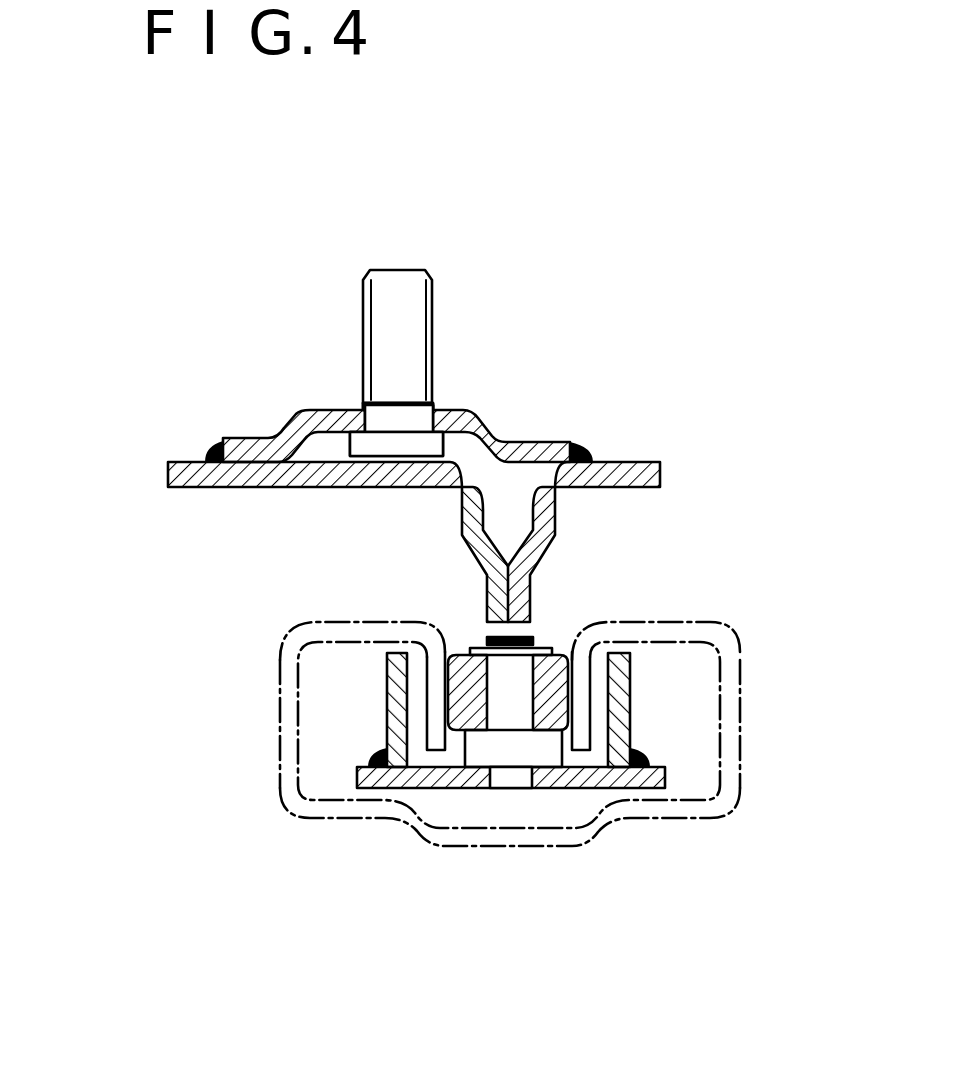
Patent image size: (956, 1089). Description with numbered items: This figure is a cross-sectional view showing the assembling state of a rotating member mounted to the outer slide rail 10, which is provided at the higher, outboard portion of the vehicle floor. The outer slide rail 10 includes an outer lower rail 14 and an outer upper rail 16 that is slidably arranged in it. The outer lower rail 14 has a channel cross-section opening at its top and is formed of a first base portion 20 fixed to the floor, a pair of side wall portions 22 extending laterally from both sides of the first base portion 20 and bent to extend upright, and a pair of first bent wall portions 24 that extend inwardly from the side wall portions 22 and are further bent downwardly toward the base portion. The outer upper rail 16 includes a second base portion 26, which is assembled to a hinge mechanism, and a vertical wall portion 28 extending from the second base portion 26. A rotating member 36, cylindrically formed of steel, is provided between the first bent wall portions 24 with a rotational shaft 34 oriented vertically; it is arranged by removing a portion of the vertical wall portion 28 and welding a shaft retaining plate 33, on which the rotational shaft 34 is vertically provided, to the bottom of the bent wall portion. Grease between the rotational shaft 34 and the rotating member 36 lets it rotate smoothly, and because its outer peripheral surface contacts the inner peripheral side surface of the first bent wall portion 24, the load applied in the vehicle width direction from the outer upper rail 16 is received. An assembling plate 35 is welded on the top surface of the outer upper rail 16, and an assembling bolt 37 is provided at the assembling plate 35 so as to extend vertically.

The outer slide rail 10 is at (112, 325).
The outer lower rail 14 is at (740, 642).
The outer upper rail 16 is at (632, 461).
The first base portion 20 is at (595, 842).
The side wall portions 22 is at (280, 675).
The first bent wall portions 24 is at (388, 716).
The second base portion 26 is at (403, 488).
The vertical wall portion 28 is at (533, 598).
The shaft retaining plate 33 is at (432, 788).
The rotational shaft 34 is at (507, 712).
The assembling plate 35 is at (545, 441).
The rotating member 36 is at (556, 712).
The assembling bolt 37 is at (433, 313).